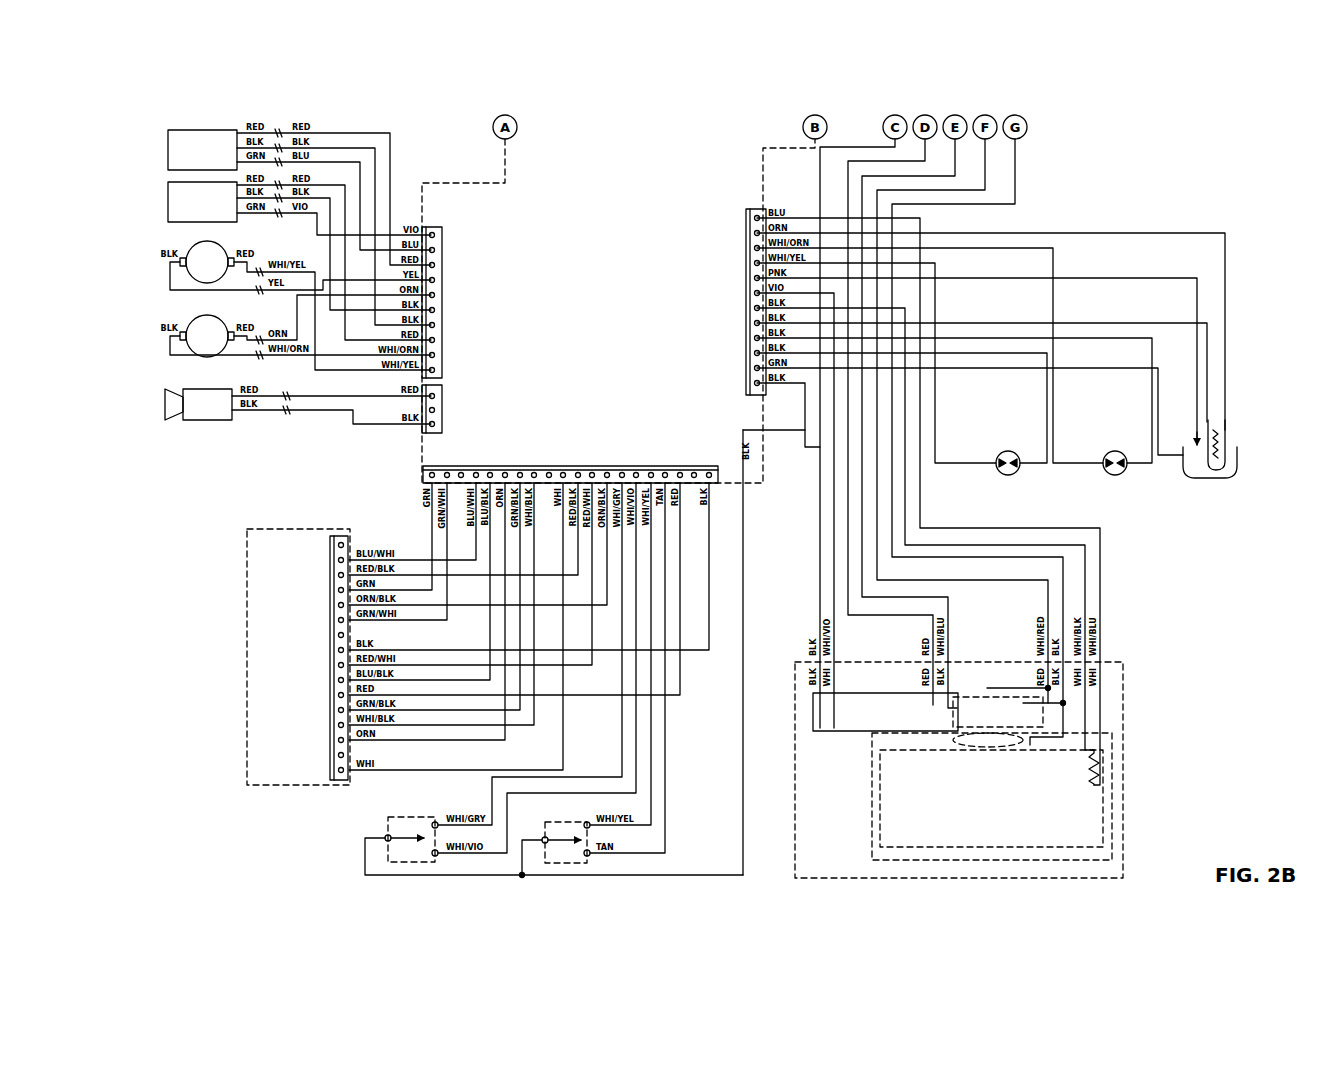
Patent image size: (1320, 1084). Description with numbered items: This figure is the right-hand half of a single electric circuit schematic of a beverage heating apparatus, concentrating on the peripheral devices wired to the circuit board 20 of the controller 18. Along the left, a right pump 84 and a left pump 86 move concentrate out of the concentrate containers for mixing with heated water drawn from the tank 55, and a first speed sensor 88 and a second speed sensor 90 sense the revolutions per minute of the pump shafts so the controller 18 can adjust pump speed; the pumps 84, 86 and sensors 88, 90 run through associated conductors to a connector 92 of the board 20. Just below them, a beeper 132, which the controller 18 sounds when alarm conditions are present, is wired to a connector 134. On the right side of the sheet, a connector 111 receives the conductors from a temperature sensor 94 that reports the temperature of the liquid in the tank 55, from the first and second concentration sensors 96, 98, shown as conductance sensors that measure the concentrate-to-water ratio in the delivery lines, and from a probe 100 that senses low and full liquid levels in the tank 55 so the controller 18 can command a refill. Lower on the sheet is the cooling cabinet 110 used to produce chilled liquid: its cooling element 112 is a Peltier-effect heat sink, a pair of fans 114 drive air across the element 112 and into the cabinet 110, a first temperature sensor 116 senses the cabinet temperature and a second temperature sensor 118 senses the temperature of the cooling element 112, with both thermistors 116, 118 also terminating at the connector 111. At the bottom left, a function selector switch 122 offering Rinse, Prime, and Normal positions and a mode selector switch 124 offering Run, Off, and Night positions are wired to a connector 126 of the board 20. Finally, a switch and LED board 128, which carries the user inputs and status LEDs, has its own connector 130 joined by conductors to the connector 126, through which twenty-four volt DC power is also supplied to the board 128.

The controller 18 is at (390, 880).
The circuit board 20 is at (645, 215).
The tank or container 55 is at (1210, 483).
The right pump 84 is at (180, 320).
The left pump 86 is at (183, 245).
The first speed sensor 88 is at (228, 226).
The second speed sensor 90 is at (195, 128).
The connector 92 is at (465, 270).
The temperature sensor 94 is at (1235, 440).
The first concentration sensor 96 is at (1110, 448).
The second concentration sensor 98 is at (1003, 448).
The probe 100 is at (1108, 130).
The cooling cabinet 110 is at (905, 825).
The connector 111 is at (745, 325).
The cooling element 112 is at (1000, 690).
The fans 114 is at (1000, 745).
The first temperature sensor 116 is at (1080, 780).
The second temperature sensor 118 is at (950, 715).
The function selector switch 122 is at (597, 862).
The mode selector switch 124 is at (385, 815).
The connector 126 is at (618, 445).
The switch and LED board 128 is at (265, 545).
The connector 130 is at (325, 628).
The beeper 132 is at (205, 430).
The connector 134 is at (462, 408).